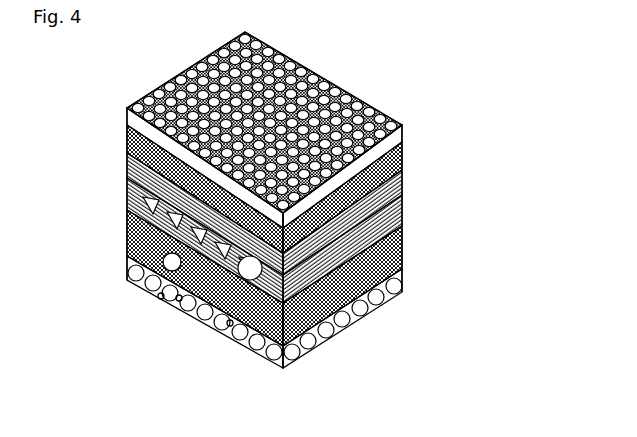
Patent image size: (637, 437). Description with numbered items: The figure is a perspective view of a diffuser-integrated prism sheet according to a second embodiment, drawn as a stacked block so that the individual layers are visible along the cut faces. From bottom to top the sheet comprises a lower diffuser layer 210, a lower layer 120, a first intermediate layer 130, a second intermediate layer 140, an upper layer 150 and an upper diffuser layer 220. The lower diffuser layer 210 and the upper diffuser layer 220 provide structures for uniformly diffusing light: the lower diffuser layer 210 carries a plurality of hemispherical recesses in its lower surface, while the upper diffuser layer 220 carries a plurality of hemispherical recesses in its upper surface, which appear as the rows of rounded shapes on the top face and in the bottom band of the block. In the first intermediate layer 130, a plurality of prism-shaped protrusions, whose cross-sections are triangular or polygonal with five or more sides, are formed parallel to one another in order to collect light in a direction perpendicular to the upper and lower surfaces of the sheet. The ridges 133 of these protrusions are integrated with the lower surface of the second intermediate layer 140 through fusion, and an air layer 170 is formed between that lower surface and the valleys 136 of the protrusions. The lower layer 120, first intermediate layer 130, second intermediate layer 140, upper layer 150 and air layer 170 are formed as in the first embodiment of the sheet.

The upper diffuser layer 220 is at (127, 120).
The upper layer 150 is at (127, 148).
The second intermediate layer 140 is at (127, 178).
The first intermediate layer 130 is at (127, 208).
The lower layer 120 is at (403, 256).
The lower diffuser layer 210 is at (403, 291).
The air layer 170 is at (320, 345).
The valleys 136 is at (178, 300).
The ridges 133 is at (228, 326).